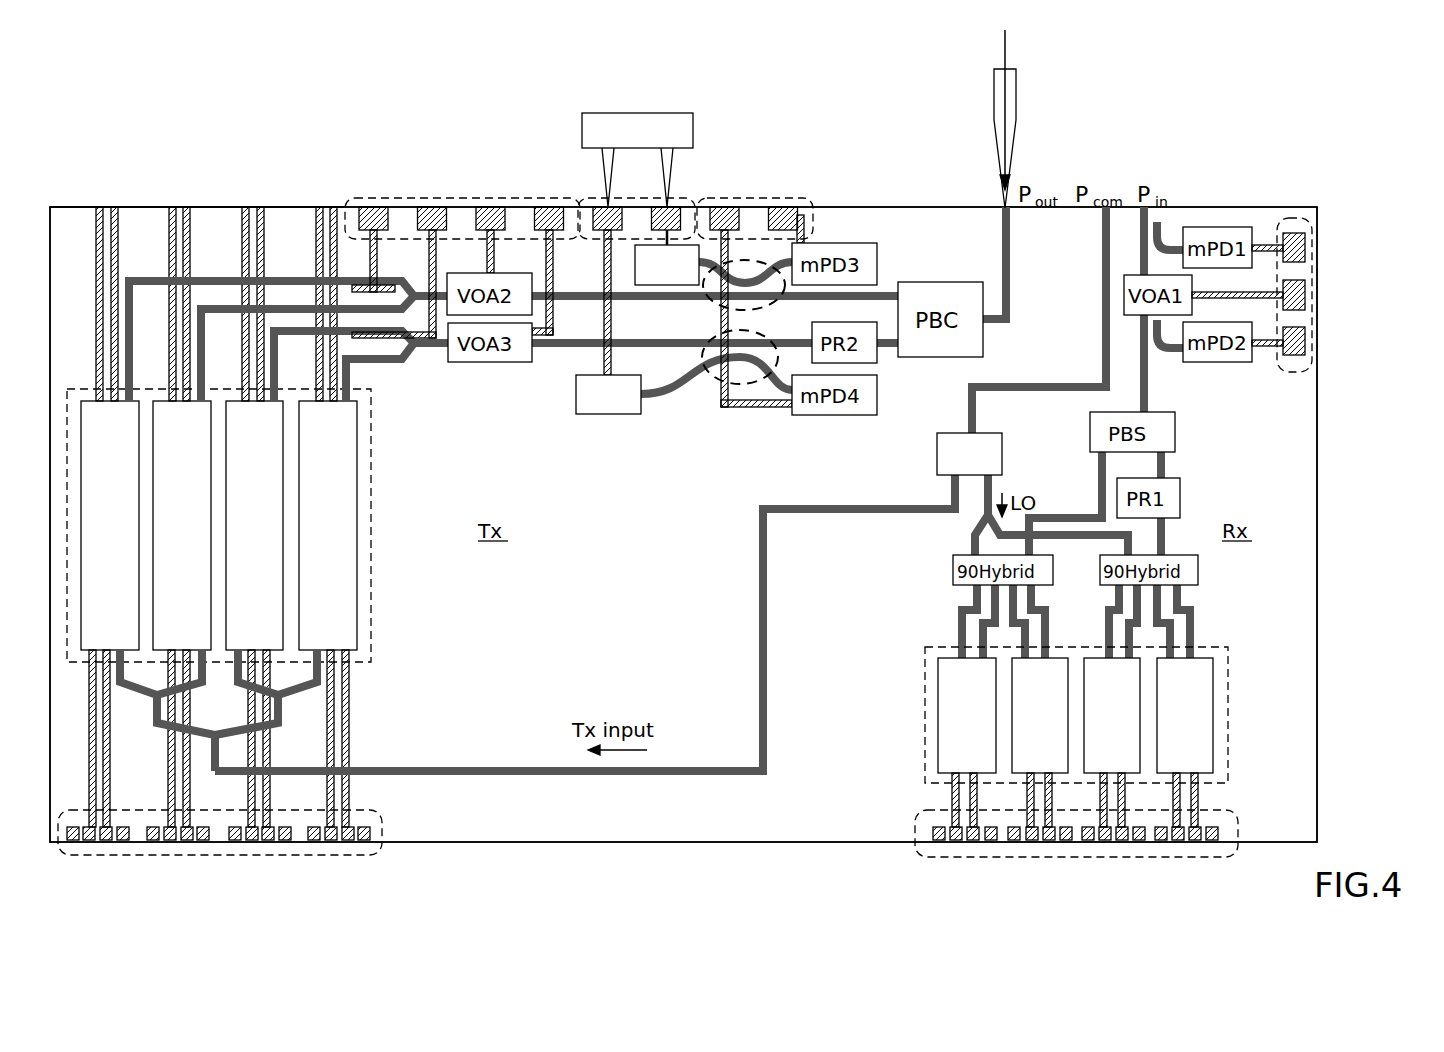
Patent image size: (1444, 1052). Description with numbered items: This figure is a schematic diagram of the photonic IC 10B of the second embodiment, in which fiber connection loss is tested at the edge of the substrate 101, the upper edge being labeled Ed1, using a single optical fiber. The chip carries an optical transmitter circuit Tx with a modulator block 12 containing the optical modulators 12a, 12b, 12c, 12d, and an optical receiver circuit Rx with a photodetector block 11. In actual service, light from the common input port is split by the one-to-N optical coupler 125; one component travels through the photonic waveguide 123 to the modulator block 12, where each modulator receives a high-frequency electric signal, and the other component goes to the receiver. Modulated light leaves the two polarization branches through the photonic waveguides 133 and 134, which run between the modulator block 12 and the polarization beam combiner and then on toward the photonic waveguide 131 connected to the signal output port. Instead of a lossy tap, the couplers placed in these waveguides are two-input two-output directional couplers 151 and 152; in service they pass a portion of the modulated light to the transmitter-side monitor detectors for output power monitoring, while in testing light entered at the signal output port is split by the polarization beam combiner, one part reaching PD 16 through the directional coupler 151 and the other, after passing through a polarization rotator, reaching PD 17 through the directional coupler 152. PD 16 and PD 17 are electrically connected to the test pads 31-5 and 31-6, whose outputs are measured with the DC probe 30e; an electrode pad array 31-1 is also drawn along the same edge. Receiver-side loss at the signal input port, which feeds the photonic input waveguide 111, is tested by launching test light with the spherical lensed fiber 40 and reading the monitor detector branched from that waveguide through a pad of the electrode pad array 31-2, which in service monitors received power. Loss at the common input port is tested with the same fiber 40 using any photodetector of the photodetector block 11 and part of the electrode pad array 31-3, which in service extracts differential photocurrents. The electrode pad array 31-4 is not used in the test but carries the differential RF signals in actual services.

The photonic IC 10B is at (112, 54).
The substrate 101 is at (1223, 207).
The edge of substrate Ed1 is at (285, 207).
The modulator block 12 is at (240, 517).
The optical modulator 12a is at (90, 398).
The optical modulator 12b is at (164, 398).
The optical modulator 12c is at (236, 398).
The optical modulator 12d is at (310, 398).
The photodetector block 11 is at (925, 672).
The PD 16 is at (668, 287).
The PD 17 is at (607, 416).
The DC probe 30e is at (632, 113).
The electrode pad group 31-1 is at (428, 198).
The electrode pad array 31-2 is at (1295, 218).
The electrode pad array 31-3 is at (1077, 858).
The electrode pad array 31-4 is at (220, 856).
The test pad 31-5 is at (697, 200).
The test pad 31-6 is at (598, 205).
The spherical lensed fiber 40 is at (994, 100).
The photonic input waveguide 111 is at (1150, 388).
The photonic waveguide 123 is at (760, 617).
The 1:N optical coupler 125 is at (937, 455).
The photonic waveguide 131 is at (1000, 240).
The photonic waveguide 133 is at (588, 292).
The photonic waveguide 134 is at (572, 348).
The directional coupler 151 is at (760, 262).
The directional coupler 152 is at (752, 384).